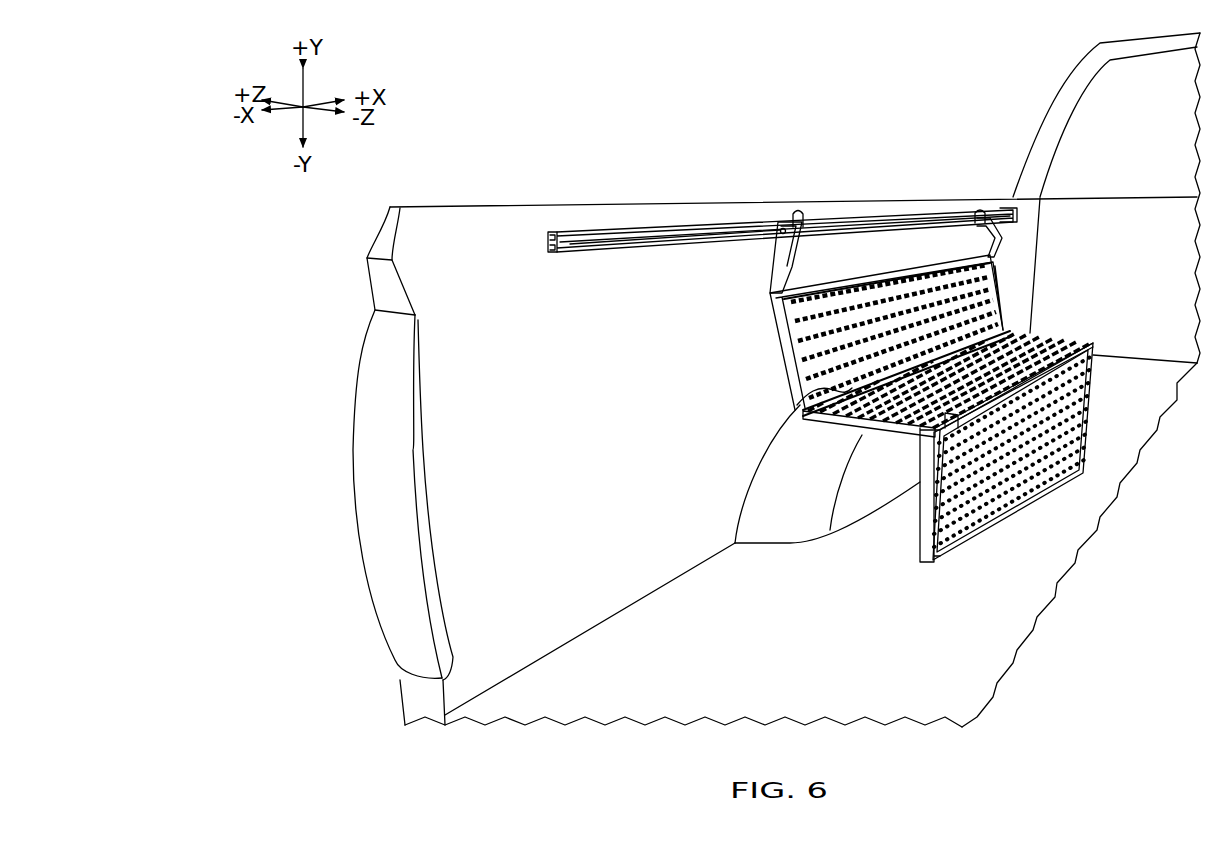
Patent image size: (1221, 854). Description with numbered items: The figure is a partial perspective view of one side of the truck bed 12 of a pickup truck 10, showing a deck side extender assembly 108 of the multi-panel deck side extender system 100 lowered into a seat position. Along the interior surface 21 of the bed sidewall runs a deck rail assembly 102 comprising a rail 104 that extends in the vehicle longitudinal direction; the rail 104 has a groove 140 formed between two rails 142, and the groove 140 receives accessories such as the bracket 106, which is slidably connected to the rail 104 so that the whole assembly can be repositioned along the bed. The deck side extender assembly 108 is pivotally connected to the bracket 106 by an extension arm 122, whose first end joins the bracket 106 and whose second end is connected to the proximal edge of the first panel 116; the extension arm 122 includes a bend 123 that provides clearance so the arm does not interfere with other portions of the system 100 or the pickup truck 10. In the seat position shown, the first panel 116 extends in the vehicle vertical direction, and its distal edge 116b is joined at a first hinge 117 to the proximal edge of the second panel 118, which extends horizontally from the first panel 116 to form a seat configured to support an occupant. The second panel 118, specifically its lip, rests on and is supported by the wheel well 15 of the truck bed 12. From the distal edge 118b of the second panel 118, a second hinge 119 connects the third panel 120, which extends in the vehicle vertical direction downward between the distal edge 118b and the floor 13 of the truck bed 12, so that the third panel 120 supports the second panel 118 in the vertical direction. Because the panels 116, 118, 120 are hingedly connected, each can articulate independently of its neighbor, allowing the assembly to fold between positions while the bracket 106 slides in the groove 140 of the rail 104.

The pickup truck 10 is at (817, 97).
The truck bed 12 is at (1135, 165).
The floor 13 is at (1097, 489).
The wheel well 15 is at (795, 533).
The interior surface 21 is at (460, 222).
The multi-panel deck side extender system 100 is at (1010, 125).
The deck rail assembly 102 is at (908, 172).
The rail 104 is at (590, 240).
The bracket 106 is at (803, 226).
The deck side extender assembly 108 is at (1102, 292).
The first panel 116 is at (787, 360).
The distal edge of the first panel 116b is at (800, 420).
The first hinge 117 is at (797, 405).
The second panel 118 is at (838, 425).
The distal edge of the second panel 118b is at (930, 427).
The second hinge 119 is at (1083, 340).
The third panel 120 is at (920, 553).
The extension arm 122 is at (780, 268).
The bend 123 is at (777, 283).
The groove 140 is at (648, 235).
The rails 142 is at (620, 255).